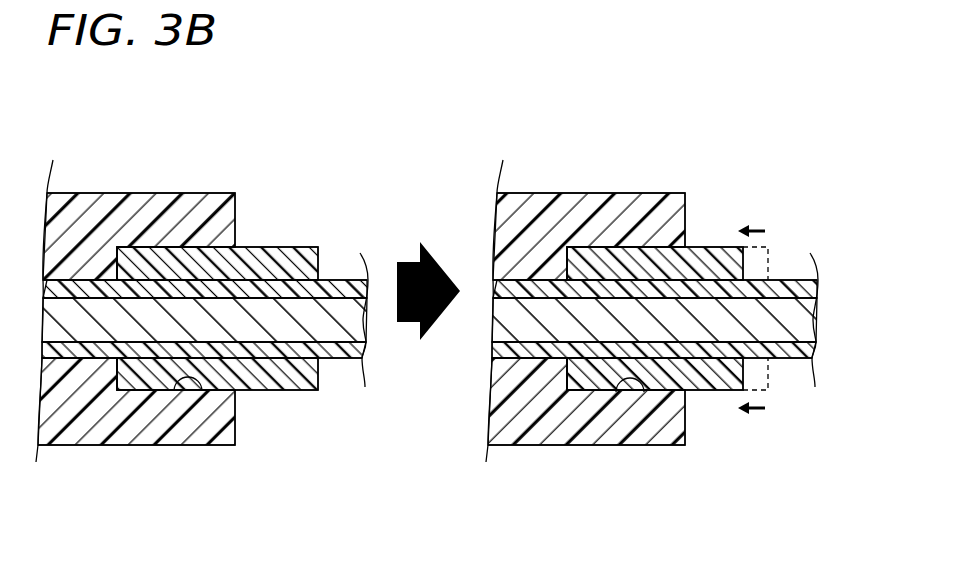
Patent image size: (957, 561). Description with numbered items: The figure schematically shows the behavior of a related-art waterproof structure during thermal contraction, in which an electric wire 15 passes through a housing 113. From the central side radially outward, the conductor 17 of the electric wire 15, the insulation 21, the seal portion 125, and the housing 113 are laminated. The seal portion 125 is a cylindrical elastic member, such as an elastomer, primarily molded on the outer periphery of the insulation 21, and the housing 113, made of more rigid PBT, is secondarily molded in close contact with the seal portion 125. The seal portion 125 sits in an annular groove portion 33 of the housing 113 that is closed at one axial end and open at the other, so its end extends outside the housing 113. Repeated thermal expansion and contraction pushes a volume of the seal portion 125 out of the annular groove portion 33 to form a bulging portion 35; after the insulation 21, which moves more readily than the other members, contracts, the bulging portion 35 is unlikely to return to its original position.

The housing 113 is at (85, 193).
The seal portion 125 is at (254, 240).
The insulation 21 is at (333, 278).
The conductor 17 is at (365, 318).
The electric wire 15 is at (375, 270).
The annular groove portion 33 is at (197, 378).
The bulging portion 35 is at (768, 375).